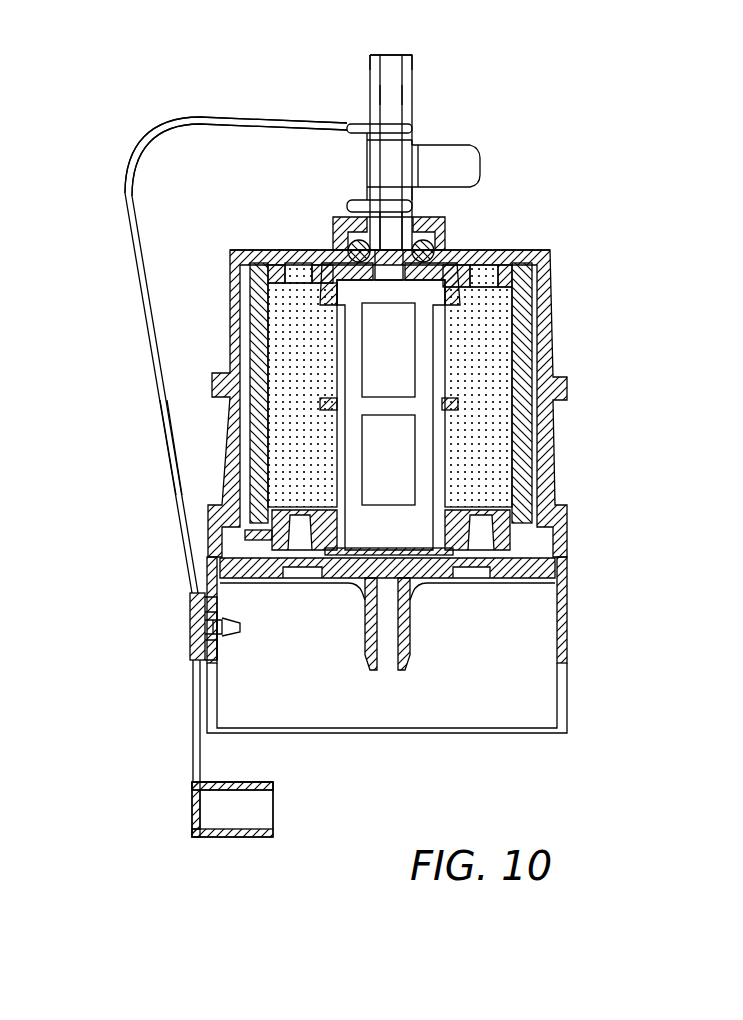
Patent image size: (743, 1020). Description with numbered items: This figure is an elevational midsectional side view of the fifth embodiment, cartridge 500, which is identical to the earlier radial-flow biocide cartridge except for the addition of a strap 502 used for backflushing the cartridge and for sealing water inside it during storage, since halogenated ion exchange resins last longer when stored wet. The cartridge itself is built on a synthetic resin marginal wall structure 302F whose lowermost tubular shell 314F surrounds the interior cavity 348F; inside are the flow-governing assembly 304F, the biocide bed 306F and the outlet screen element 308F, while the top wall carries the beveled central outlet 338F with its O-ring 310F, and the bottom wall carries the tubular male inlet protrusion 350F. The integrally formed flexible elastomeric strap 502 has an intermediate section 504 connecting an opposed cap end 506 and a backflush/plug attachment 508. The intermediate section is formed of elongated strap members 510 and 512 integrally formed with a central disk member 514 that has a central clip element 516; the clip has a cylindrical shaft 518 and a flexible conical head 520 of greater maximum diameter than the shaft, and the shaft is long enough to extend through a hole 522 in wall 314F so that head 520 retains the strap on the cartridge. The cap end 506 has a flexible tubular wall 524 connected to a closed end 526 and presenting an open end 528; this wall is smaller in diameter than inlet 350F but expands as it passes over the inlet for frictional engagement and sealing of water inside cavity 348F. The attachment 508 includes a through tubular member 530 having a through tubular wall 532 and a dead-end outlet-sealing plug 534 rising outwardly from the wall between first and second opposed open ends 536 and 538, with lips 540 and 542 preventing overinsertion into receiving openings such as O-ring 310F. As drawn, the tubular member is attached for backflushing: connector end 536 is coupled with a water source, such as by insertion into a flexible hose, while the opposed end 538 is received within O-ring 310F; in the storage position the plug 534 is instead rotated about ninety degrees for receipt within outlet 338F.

The marginal wall structure 302F is at (553, 393).
The flow-governing assembly 304F is at (523, 333).
The biocide bed 306F is at (490, 308).
The outlet screen element 308F is at (430, 452).
The O-ring 310F is at (443, 243).
The lowermost tubular shell 314F is at (567, 617).
The beveled central outlet 338F is at (337, 217).
The interior cavity 348F is at (290, 352).
The tubular male inlet protrusion 350F is at (405, 632).
The cartridge 500 is at (562, 250).
The strap 502 is at (203, 104).
The intermediate section 504 is at (140, 293).
The cap end 506 is at (243, 848).
The backflush/plug attachment 508 is at (461, 141).
The elongated strap member 510 is at (175, 492).
The elongated strap member 512 is at (191, 742).
The central disk member 514 is at (190, 602).
The clip element 516 is at (217, 646).
The cylindrical shaft 518 is at (215, 605).
The flexible conical head 520 is at (238, 619).
The hole 522 is at (217, 636).
The flexible tubular wall 524 is at (232, 782).
The closed end 526 is at (191, 814).
The open end 528 is at (275, 813).
The through tubular member 530 is at (413, 95).
The through tubular wall 532 is at (392, 78).
The outlet-sealing plug 534 is at (467, 165).
The connector end 536 is at (370, 55).
The open end 538 is at (392, 230).
The lip 540 is at (347, 128).
The lip 542 is at (350, 203).